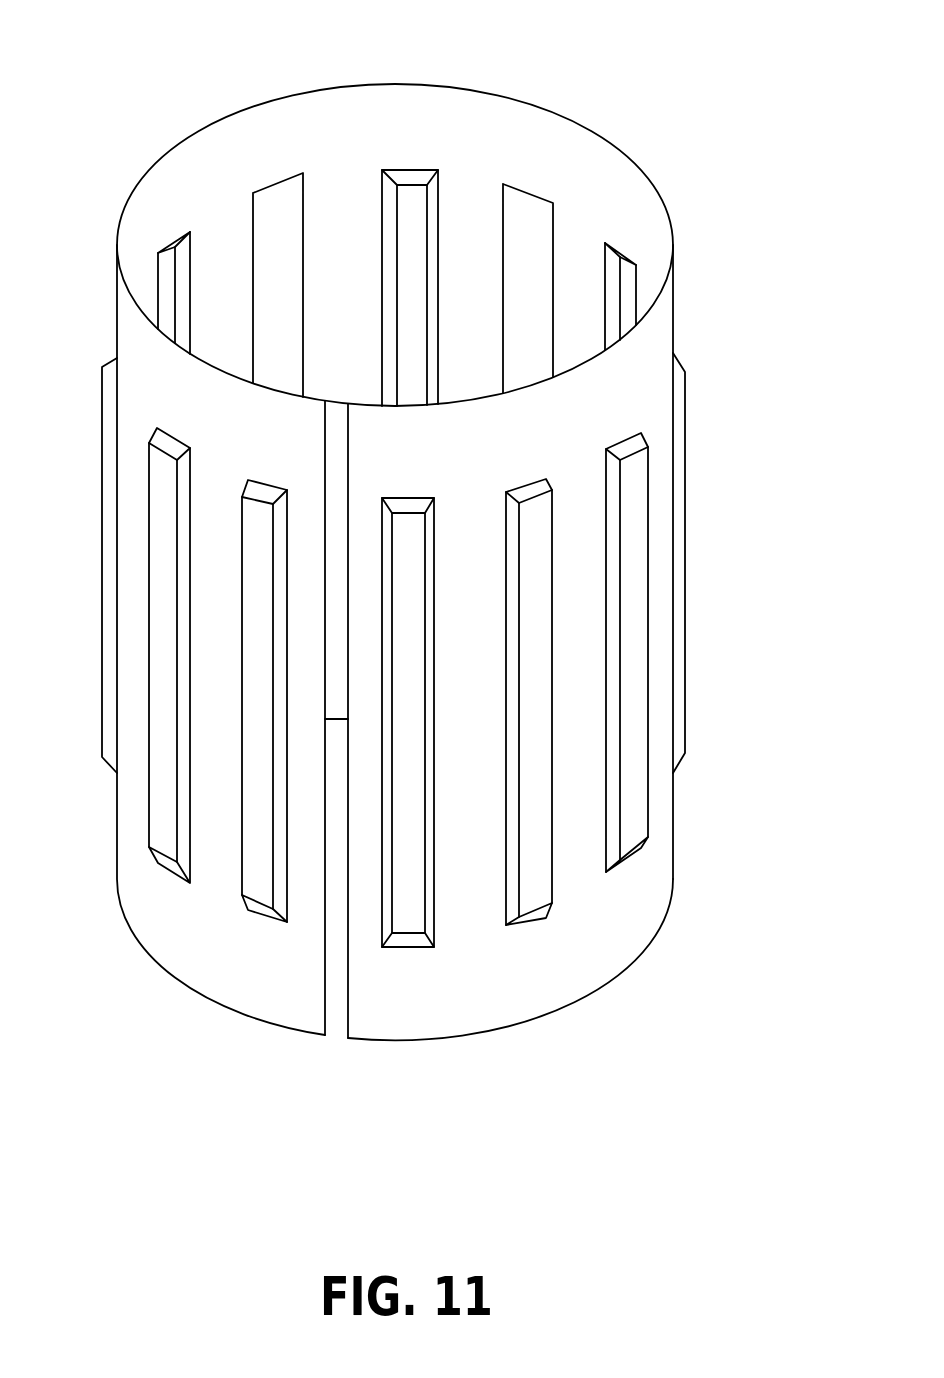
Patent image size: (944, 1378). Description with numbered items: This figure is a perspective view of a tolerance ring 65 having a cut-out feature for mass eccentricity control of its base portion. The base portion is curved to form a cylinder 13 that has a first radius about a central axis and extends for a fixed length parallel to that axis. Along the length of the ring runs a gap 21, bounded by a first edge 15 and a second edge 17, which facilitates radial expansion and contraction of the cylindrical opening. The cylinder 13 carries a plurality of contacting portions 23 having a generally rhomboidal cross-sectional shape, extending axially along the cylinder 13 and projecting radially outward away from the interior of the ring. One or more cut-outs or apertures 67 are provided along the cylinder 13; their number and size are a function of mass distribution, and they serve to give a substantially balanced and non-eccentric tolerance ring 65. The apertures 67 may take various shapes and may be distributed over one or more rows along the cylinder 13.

The cylinder 13 is at (630, 377).
The first edge 15 is at (297, 998).
The second edge 17 is at (373, 998).
The gap 21 is at (333, 940).
The contacting portions 23 is at (635, 555).
The tolerance ring 65 is at (710, 160).
The apertures 67 is at (280, 213).